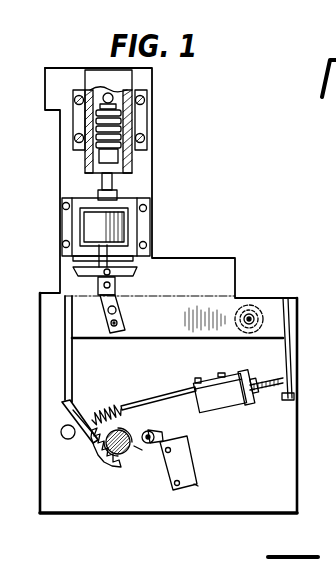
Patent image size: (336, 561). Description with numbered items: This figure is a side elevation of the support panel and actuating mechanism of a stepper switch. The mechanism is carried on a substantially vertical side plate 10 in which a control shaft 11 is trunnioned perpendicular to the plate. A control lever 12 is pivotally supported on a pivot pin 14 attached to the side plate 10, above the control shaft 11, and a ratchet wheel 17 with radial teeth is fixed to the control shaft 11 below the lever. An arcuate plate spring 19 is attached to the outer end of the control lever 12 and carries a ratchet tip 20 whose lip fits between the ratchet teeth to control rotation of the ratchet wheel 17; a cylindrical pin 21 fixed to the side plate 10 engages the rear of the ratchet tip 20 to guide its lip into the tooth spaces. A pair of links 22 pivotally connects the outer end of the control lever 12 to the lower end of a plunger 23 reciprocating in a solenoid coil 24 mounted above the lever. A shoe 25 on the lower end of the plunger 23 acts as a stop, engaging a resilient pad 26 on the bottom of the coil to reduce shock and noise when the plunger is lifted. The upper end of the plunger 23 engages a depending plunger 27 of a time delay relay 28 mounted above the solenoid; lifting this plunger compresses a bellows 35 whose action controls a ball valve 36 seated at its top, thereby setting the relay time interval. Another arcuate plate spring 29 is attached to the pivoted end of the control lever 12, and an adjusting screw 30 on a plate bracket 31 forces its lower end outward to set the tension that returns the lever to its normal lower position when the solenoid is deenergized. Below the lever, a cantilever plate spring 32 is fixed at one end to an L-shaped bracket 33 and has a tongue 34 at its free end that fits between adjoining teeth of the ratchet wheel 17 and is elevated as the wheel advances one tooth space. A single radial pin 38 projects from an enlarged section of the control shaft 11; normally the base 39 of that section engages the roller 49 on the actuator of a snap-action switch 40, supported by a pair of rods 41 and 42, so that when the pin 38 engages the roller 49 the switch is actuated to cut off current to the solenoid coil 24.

The side plate 10 is at (140, 513).
The control shaft 11 is at (114, 466).
The control lever 12 is at (175, 340).
The pivot pin 14 is at (255, 306).
The ratchet wheel 17 is at (95, 467).
The plate spring 19 is at (70, 355).
The ratchet tip 20 is at (95, 404).
The cylindrical pin 21 is at (68, 440).
The links 22 is at (124, 297).
The plunger 23 is at (117, 197).
The solenoid coil 24 is at (84, 228).
The shoe 25 is at (134, 273).
The resilient pad 26 is at (80, 254).
The plunger 27 is at (100, 178).
The time delay relay 28 is at (142, 120).
The plate spring 29 is at (289, 342).
The adjusting screw 30 is at (272, 386).
The plate bracket 31 is at (252, 406).
The cantilever plate spring 32 is at (147, 398).
The L-shaped bracket 33 is at (220, 406).
The tongue 34 is at (112, 407).
The bellows 35 is at (84, 153).
The ball valve 36 is at (125, 88).
The radial pin 38 is at (143, 424).
The base 39 is at (138, 452).
The snap-action switch 40 is at (196, 486).
The rod 41 is at (178, 487).
The rod 42 is at (171, 450).
The roller 49 is at (156, 424).